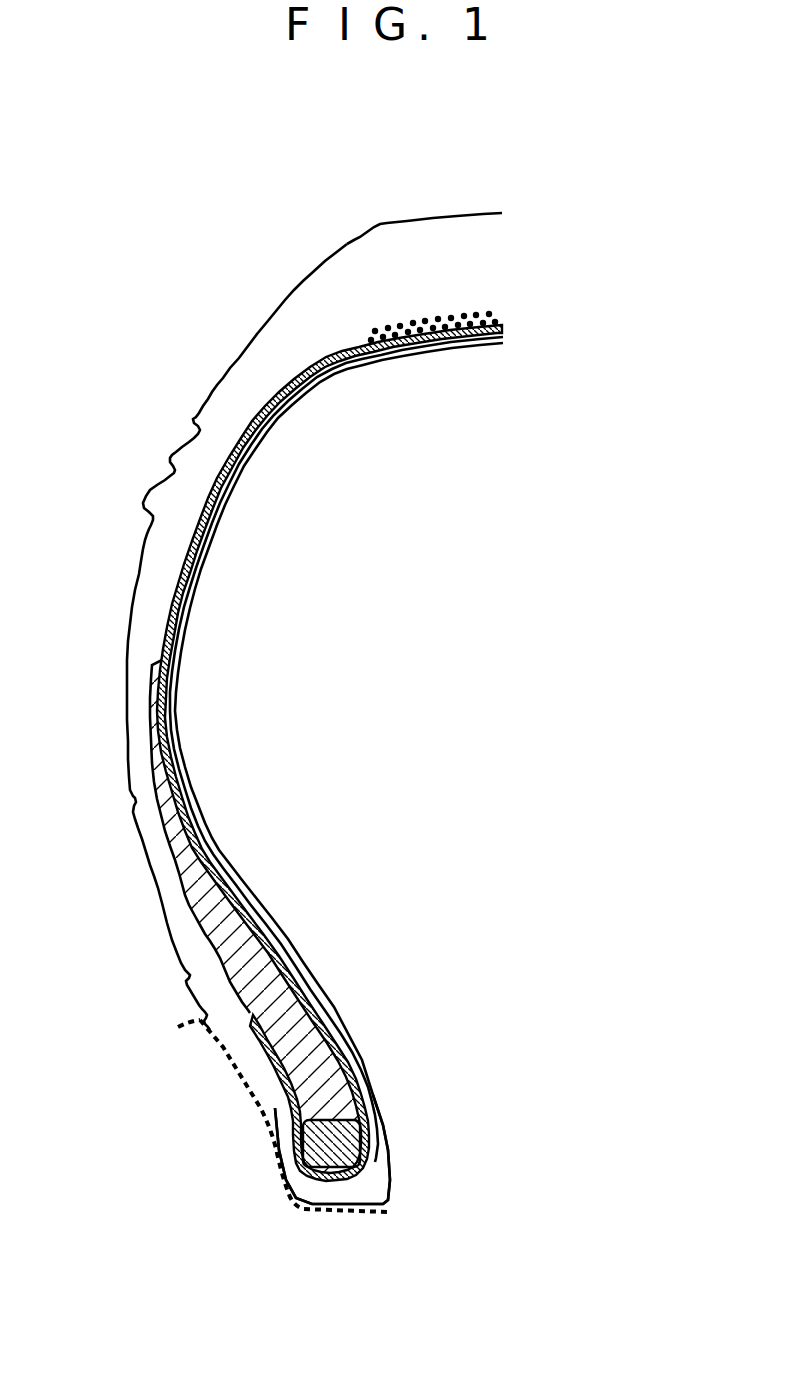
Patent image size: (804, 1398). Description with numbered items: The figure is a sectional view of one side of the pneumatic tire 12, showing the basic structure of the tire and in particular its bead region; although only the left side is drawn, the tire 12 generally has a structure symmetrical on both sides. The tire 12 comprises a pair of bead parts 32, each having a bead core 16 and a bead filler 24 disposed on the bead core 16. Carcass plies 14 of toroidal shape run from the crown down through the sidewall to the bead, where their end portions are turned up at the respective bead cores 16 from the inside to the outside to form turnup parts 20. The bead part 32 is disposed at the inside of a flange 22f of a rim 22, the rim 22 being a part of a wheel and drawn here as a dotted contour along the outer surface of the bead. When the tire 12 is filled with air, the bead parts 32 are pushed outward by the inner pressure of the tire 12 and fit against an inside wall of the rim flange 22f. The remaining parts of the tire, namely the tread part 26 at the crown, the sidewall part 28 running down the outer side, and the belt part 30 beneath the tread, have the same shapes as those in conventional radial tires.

The pneumatic tire 12 is at (207, 177).
The carcass plies 14 is at (199, 535).
The bead core 16 is at (352, 1156).
The turnup part 20 is at (277, 1108).
The rim 22 is at (318, 1211).
The rim flange 22f is at (187, 1032).
The bead filler 24 is at (212, 908).
The tread part 26 is at (412, 218).
The sidewall part 28 is at (140, 568).
The belt part 30 is at (478, 310).
The bead part 32 is at (403, 1092).